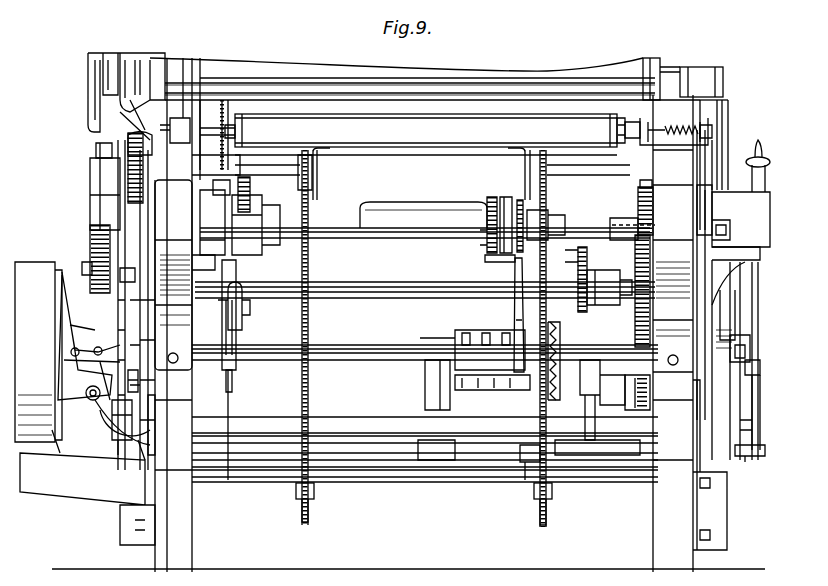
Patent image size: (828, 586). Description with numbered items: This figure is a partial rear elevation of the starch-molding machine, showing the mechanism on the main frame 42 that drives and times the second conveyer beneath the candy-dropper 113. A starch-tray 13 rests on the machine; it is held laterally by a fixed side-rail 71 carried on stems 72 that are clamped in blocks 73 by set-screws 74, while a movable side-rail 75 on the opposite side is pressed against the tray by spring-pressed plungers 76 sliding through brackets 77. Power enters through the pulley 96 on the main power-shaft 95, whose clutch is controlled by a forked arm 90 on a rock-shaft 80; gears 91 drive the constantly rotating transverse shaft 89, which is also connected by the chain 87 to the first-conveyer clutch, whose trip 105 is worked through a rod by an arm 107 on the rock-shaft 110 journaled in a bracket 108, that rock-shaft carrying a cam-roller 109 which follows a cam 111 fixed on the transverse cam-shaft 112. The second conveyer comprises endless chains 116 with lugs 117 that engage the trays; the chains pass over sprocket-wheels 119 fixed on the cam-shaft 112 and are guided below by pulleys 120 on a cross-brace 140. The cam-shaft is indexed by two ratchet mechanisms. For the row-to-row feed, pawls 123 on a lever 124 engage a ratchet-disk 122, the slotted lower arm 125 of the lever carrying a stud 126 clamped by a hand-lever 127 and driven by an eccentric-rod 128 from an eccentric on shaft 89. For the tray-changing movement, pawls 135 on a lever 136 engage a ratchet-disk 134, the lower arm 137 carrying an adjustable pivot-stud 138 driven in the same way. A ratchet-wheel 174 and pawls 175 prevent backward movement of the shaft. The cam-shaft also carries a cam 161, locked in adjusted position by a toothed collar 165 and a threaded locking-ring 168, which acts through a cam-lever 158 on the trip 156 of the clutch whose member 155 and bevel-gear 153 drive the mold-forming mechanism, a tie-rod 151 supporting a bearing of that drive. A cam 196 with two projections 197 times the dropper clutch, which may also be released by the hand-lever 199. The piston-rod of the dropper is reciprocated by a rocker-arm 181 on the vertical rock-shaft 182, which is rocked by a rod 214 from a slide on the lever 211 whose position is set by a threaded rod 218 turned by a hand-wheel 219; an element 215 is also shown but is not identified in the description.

The starch-tray 13 is at (430, 134).
The main frame 42 is at (424, 315).
The side-rail 71 is at (225, 138).
The stems 72 is at (210, 128).
The blocks 73 is at (177, 135).
The set-screws 74 is at (179, 121).
The movable side-rail 75 is at (628, 112).
The spring-pressed plungers 76 is at (712, 132).
The brackets 77 is at (705, 128).
The rock-shaft 80 is at (105, 410).
The chain 87 is at (573, 279).
The transverse shaft 89 is at (350, 282).
The forked arm 90 is at (92, 372).
The gears 91 is at (650, 392).
The main power-shaft 95 is at (368, 358).
The pulley 96 is at (38, 352).
The trip 105 is at (650, 310).
The arm 107 is at (622, 304).
The bracket 108 is at (425, 333).
The cam-roller 109 is at (730, 228).
The rock-shaft 110 is at (617, 221).
The cam 111 is at (712, 212).
The cam-shaft 112 is at (392, 232).
The candy-dropper 113 is at (580, 75).
The endless chains 116 is at (328, 383).
The lugs 117 is at (295, 520).
The sprocket-wheels 119 is at (312, 200).
The pulleys 120 is at (315, 490).
The ratchet-disk 122 is at (88, 222).
The pawls 123 is at (96, 150).
The lever 124 is at (135, 183).
The lower arm 125 is at (140, 392).
The stud 126 is at (118, 440).
The hand-lever 127 is at (166, 445).
The eccentric-rod 128 is at (100, 430).
The ratchet-disk 134 is at (250, 205).
The pawls 135 is at (246, 177).
The lever 136 is at (213, 217).
The lower arm 137 is at (238, 362).
The pivot-stud 138 is at (245, 316).
The cross-brace 140 is at (432, 470).
The tie-rod 151 is at (358, 420).
The bevel-gear 153 is at (556, 400).
The clutch member 155 is at (483, 332).
The trip 156 is at (532, 420).
The cam-lever 158 is at (514, 273).
The cam 161 is at (505, 197).
The collar 165 is at (487, 205).
The threaded locking-ring 168 is at (520, 200).
The ratchet-wheel 174 is at (638, 195).
The pawls 175 is at (645, 180).
The rocker-arm 181 is at (708, 78).
The vertical rock-shaft 182 is at (712, 320).
The cam 196 is at (110, 187).
The projections 197 is at (95, 268).
The hand-lever 199 is at (130, 140).
The lever 211 is at (742, 462).
The rod 214 is at (750, 345).
The clip 215 is at (772, 368).
The threaded rod 218 is at (772, 420).
The hand-wheel 219 is at (765, 135).